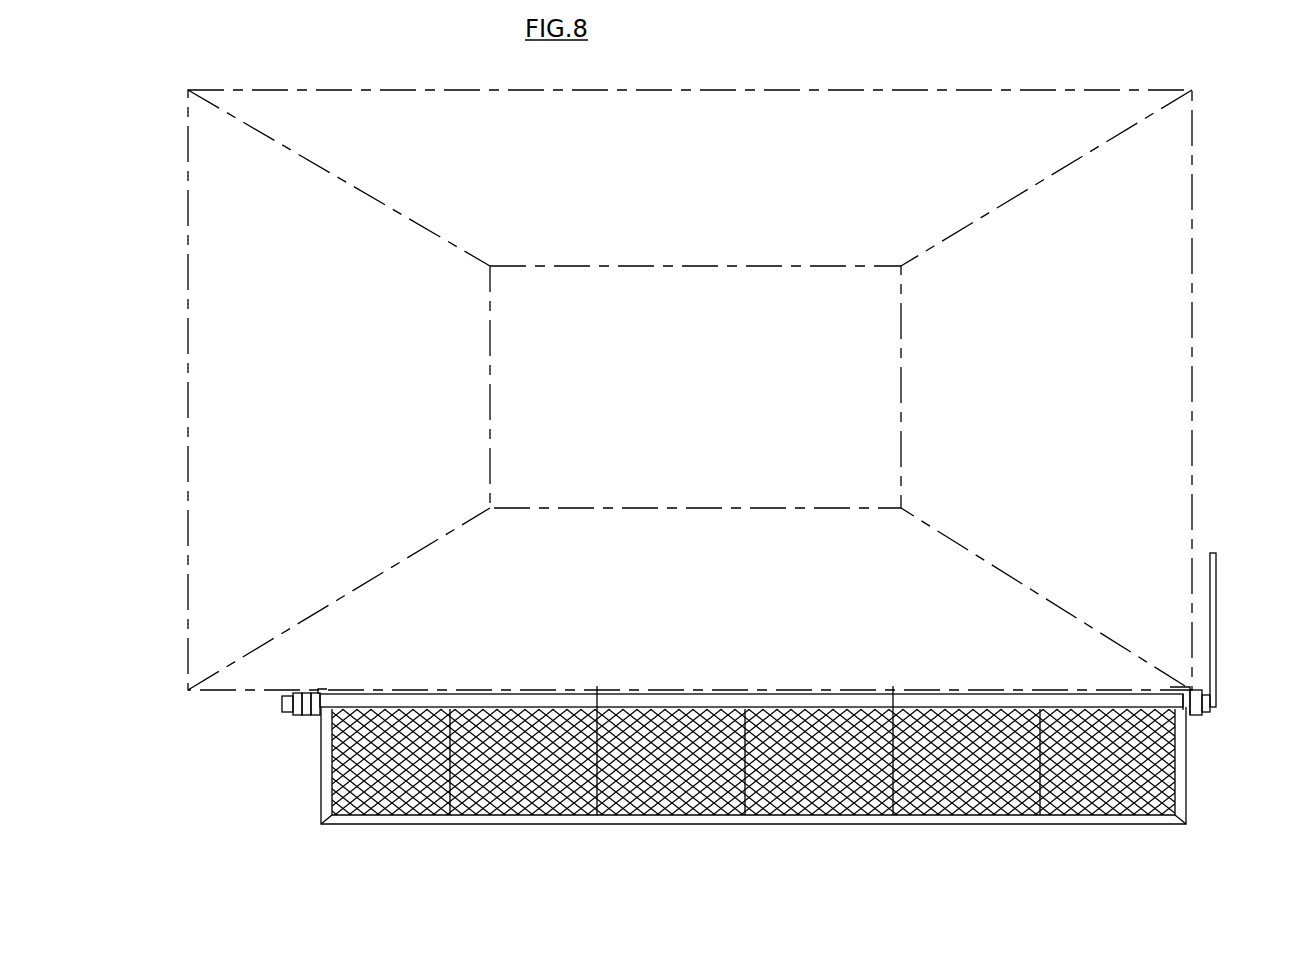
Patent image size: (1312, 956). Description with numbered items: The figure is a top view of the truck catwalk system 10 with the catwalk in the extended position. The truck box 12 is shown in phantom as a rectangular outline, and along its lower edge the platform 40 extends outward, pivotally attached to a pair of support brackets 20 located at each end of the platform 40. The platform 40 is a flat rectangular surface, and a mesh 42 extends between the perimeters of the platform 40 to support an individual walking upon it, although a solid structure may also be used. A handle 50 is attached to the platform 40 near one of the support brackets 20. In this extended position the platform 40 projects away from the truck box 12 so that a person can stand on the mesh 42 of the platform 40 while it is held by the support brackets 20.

The truck catwalk system 10 is at (247, 811).
The truck box 12 is at (589, 507).
The support brackets 20 is at (319, 689).
The platform 40 is at (1153, 815).
The mesh 42 is at (760, 800).
The handle 50 is at (1216, 610).